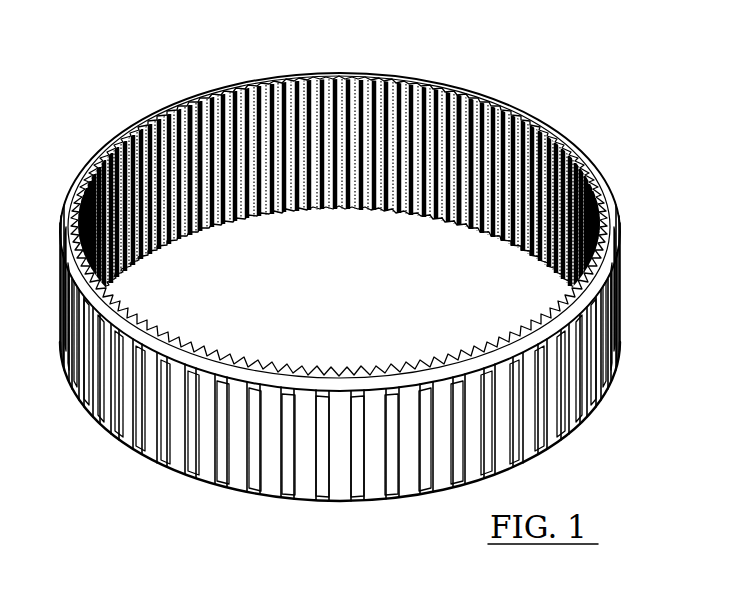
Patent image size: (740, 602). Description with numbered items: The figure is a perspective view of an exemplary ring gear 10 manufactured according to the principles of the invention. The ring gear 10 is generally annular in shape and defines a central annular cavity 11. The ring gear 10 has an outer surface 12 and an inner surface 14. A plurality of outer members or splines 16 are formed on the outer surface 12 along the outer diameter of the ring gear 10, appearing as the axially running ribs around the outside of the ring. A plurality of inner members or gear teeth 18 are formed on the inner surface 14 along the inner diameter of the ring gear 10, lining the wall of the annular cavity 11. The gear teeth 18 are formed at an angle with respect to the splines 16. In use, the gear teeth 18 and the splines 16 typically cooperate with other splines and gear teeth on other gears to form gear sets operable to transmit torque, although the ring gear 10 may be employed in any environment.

The ring gear 10 is at (350, 292).
The annular cavity 11 is at (462, 228).
The outer surface 12 is at (272, 475).
The inner surface 14 is at (300, 210).
The splines 16 is at (215, 467).
The gear teeth 18 is at (193, 232).